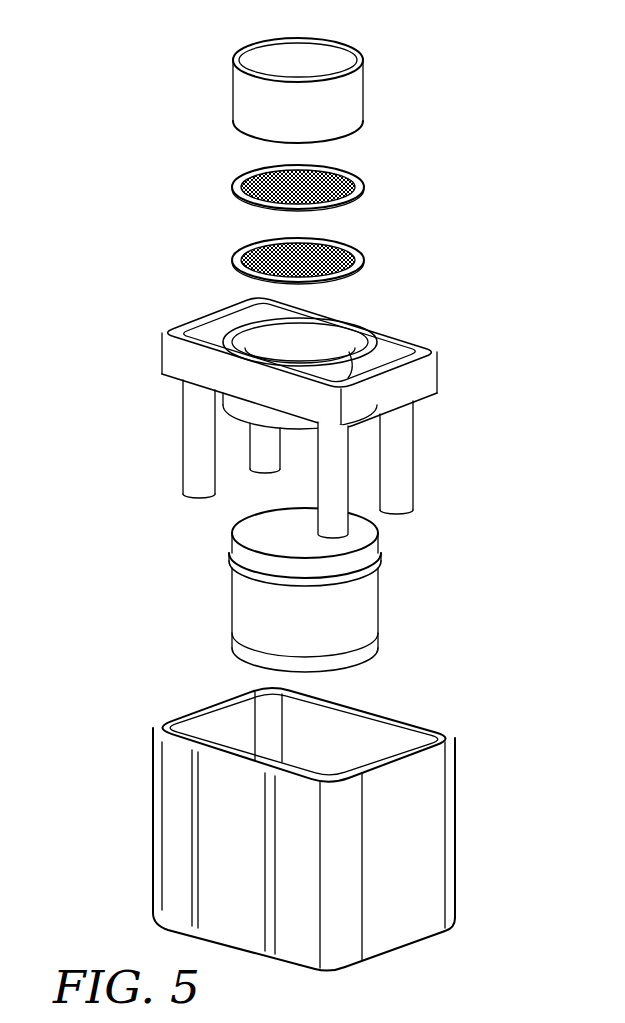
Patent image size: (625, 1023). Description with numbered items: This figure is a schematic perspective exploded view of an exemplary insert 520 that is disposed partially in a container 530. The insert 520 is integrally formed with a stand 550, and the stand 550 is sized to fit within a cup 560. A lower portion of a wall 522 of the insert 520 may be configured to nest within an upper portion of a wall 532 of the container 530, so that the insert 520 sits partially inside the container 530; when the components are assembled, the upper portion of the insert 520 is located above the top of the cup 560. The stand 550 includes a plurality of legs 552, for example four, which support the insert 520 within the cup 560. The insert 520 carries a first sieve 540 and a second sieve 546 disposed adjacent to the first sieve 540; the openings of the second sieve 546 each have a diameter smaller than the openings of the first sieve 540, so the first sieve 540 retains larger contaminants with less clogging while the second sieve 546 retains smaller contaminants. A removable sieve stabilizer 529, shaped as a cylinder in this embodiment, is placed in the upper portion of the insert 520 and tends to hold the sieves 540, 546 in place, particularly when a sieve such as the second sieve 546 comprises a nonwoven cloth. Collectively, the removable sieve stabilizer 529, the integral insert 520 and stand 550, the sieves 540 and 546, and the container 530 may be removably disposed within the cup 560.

The removable sieve stabilizer 529 is at (265, 58).
The first sieve 540 is at (253, 173).
The second sieve 546 is at (242, 248).
The insert 520 is at (304, 406).
The stand 550 is at (197, 364).
The wall of the insert 522 is at (240, 427).
The legs 552 is at (398, 468).
The container 530 is at (349, 590).
The wall of the container 532 is at (357, 560).
The cup 560 is at (430, 835).